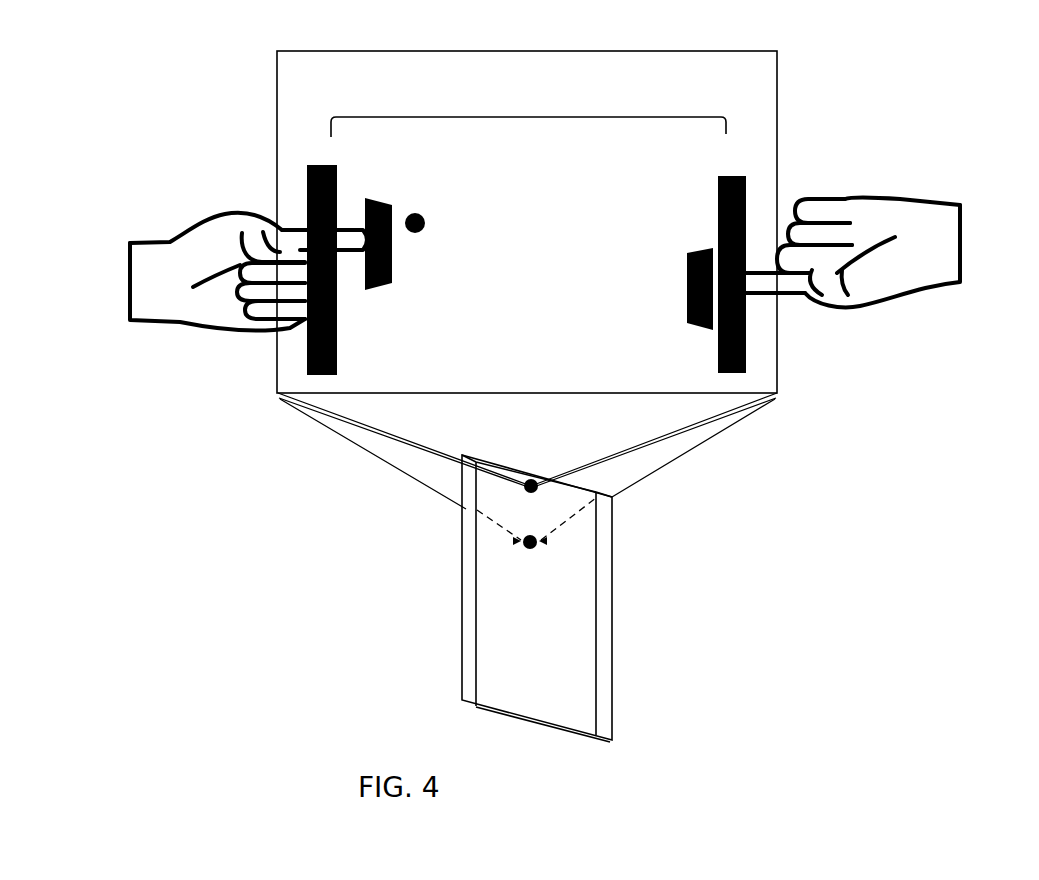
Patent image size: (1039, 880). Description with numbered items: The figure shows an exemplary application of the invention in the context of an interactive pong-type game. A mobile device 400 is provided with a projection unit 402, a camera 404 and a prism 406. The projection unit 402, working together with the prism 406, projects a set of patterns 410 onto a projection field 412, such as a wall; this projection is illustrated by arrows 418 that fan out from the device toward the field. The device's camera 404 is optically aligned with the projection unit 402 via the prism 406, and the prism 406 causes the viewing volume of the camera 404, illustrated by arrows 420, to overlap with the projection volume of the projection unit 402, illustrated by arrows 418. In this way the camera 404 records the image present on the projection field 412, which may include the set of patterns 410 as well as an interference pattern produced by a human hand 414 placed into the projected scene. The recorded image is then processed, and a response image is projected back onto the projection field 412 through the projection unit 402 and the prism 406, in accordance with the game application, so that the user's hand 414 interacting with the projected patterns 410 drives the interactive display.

The mobile device 400 is at (462, 640).
The projection unit 402 is at (531, 530).
The camera 404 is at (536, 546).
The prism 406 is at (533, 479).
The set of patterns 410 is at (529, 113).
The projection field 412 is at (276, 117).
The human hand 414 is at (128, 285).
The arrows illustrating projection 418 is at (345, 418).
The arrows illustrating camera viewing volume 420 is at (392, 464).